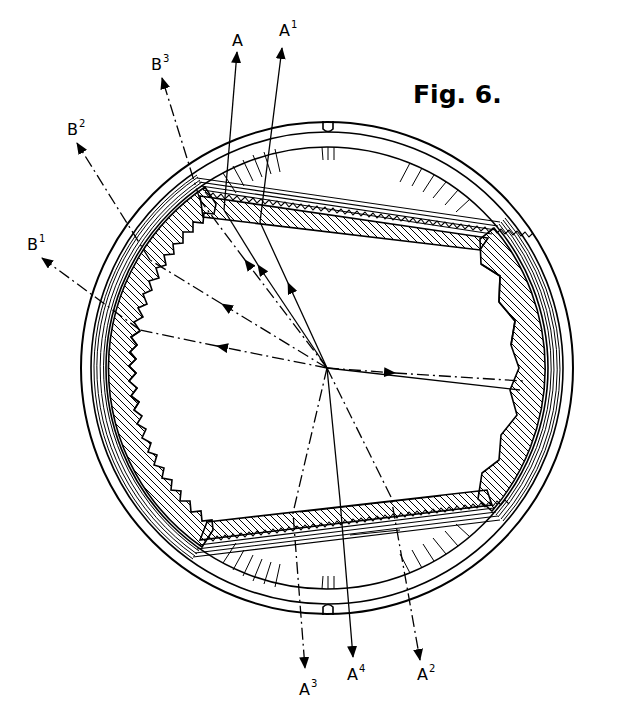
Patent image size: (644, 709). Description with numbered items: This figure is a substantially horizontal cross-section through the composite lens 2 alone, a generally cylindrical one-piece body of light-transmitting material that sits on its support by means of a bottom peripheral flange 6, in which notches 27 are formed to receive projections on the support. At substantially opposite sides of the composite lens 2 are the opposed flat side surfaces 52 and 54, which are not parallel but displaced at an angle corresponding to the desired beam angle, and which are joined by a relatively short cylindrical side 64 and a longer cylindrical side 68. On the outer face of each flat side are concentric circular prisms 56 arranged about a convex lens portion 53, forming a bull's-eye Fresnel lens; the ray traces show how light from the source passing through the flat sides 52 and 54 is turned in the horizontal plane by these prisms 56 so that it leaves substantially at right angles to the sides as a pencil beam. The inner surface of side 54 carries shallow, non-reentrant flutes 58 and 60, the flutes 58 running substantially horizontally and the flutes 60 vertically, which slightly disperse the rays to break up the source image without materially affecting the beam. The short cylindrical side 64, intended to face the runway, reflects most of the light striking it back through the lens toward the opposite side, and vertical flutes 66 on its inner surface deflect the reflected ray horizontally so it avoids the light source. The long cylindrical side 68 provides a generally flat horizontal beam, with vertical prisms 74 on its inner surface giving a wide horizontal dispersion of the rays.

The composite lens 2 is at (571, 243).
The bottom peripheral flange 6 is at (540, 486).
The notches 27 is at (329, 121).
The flat side surface 52 is at (400, 199).
The convex lens portion 53 is at (353, 198).
The flat side surface 54 is at (472, 552).
The concentric circular prisms 56 is at (315, 197).
The shallow flutes 58 is at (430, 496).
The shallow flutes 60 is at (374, 505).
The short cylindrical side 64 is at (548, 333).
The vertical flutes 66 is at (520, 328).
The long cylindrical side 68 is at (178, 475).
The vertical prisms 74 is at (143, 398).